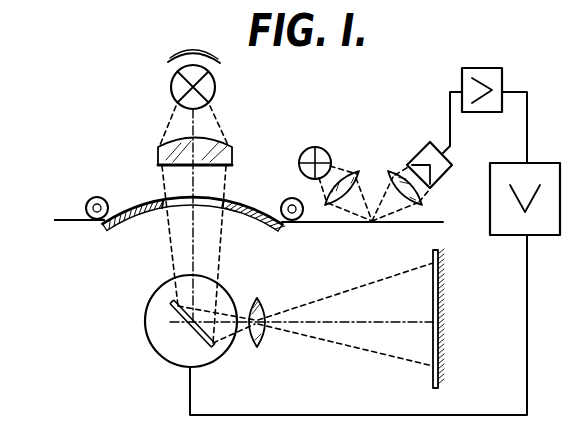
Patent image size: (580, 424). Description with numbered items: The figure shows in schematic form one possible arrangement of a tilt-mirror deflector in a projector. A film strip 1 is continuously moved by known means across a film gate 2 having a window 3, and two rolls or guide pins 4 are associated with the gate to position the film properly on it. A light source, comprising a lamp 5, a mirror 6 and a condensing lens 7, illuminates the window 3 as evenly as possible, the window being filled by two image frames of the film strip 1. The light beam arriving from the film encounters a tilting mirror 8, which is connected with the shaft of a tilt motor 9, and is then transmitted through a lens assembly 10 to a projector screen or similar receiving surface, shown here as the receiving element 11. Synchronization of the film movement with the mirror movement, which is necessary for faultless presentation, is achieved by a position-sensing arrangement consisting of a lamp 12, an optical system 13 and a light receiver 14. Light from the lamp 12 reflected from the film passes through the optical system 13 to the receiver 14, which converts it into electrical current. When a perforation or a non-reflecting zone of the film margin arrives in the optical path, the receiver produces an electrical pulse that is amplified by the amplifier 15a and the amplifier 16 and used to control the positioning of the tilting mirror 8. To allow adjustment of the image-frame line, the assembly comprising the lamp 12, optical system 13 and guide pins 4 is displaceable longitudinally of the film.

The film strip 1 is at (64, 217).
The film gate 2 is at (112, 231).
The window 3 is at (171, 214).
The rolls or guide pins 4 is at (101, 197).
The lamp 5 is at (172, 85).
The mirror 6 is at (193, 49).
The condensing lens 7 is at (158, 152).
The tilting mirror 8 is at (170, 313).
The tilt motor 9 is at (158, 350).
The lens assembly 10 is at (263, 346).
The photodetector array 11 is at (431, 378).
The lamp 12 is at (316, 148).
The optical system 13 is at (395, 170).
The light receiver 14 is at (424, 146).
The amplifier 15a is at (490, 68).
The amplifier 16 is at (543, 163).